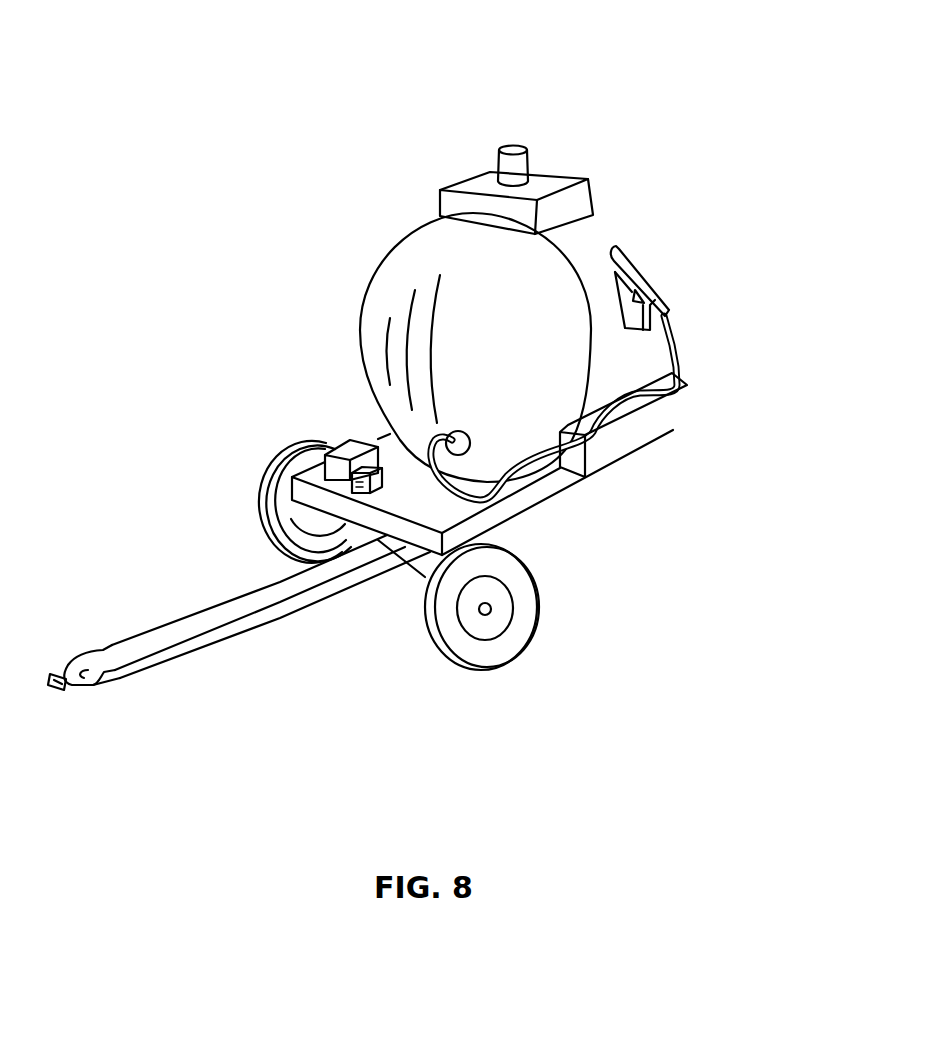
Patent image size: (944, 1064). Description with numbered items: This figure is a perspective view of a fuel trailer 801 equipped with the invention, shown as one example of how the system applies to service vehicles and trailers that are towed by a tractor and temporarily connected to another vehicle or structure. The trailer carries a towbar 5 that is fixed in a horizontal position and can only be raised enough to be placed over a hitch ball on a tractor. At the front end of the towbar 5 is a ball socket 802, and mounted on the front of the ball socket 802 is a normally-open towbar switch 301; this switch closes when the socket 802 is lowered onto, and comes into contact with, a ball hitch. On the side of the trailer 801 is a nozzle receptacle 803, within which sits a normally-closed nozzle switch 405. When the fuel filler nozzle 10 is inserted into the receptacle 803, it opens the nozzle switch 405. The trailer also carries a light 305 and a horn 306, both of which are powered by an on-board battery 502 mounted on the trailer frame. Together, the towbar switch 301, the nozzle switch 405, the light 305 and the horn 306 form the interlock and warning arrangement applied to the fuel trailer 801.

The fuel trailer 801 is at (358, 153).
The light 305 is at (512, 172).
The fuel filler nozzle 10 is at (638, 268).
The nozzle receptacle 803 is at (657, 300).
The nozzle switch 405 is at (662, 312).
The on-board battery 502 is at (330, 465).
The horn 306 is at (373, 495).
The towbar 5 is at (240, 607).
The ball socket 802 is at (95, 675).
The towbar switch 301 is at (68, 690).